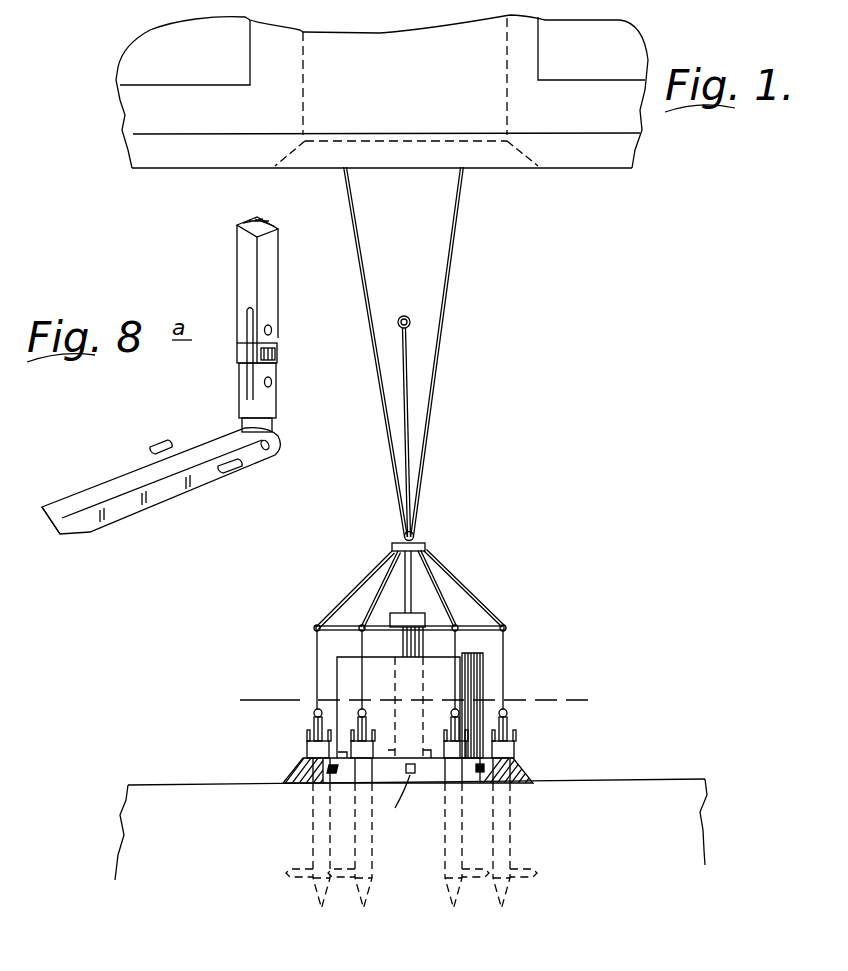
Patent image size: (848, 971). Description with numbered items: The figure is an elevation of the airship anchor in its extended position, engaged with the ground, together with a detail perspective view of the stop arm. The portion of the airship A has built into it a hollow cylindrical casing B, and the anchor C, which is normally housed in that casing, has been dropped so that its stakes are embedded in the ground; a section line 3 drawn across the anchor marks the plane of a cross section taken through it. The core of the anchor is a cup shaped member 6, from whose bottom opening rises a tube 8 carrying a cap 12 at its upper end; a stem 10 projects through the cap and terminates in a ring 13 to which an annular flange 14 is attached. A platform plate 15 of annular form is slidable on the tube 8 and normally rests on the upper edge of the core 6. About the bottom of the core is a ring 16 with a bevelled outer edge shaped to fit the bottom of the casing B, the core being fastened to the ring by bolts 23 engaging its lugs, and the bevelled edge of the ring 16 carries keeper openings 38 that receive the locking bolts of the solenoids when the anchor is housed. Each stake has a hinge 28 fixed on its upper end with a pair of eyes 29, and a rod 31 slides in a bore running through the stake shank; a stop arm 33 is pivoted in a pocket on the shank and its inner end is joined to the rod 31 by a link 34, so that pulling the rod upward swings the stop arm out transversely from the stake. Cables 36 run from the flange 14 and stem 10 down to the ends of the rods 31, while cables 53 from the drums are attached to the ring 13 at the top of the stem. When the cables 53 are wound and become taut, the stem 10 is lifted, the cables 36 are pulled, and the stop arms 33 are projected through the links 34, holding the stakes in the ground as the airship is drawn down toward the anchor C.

In FIG. 1, the airship portion A is at (228, 114).
In FIG. 1, the casing B is at (452, 77).
In FIG. 1, the anchor C is at (531, 774).
In FIG. 1, the cables 53 is at (447, 311).
In FIG. 1, the ring 13 is at (414, 535).
In FIG. 1, the annular flange 14 is at (425, 544).
In FIG. 1, the stem 10 is at (410, 588).
In FIG. 1, the cap 12 is at (397, 614).
In FIG. 1, the cables 36 is at (353, 592).
In FIG. 1, the platform plate 15 is at (528, 568).
In FIG. 1, the tube 8 is at (418, 640).
In FIG. 1, the cup shaped member 6 is at (388, 661).
In FIG. 1, the bolts 23 is at (407, 750).
In FIG. 1, the section line 3- 3 is at (410, 700).
In FIG. 1, the rod 31 is at (508, 725).
In FIG. 8A, the rod 31 is at (267, 279).
In FIG. 1, the eyes 29 is at (511, 735).
In FIG. 1, the hinge 28 is at (515, 751).
In FIG. 1, the ring 16 is at (433, 772).
In FIG. 1, the keeper openings 38 is at (336, 772).
In FIG. 8A, the link 34 is at (273, 357).
In FIG. 8A, the stop arm 33 is at (183, 485).